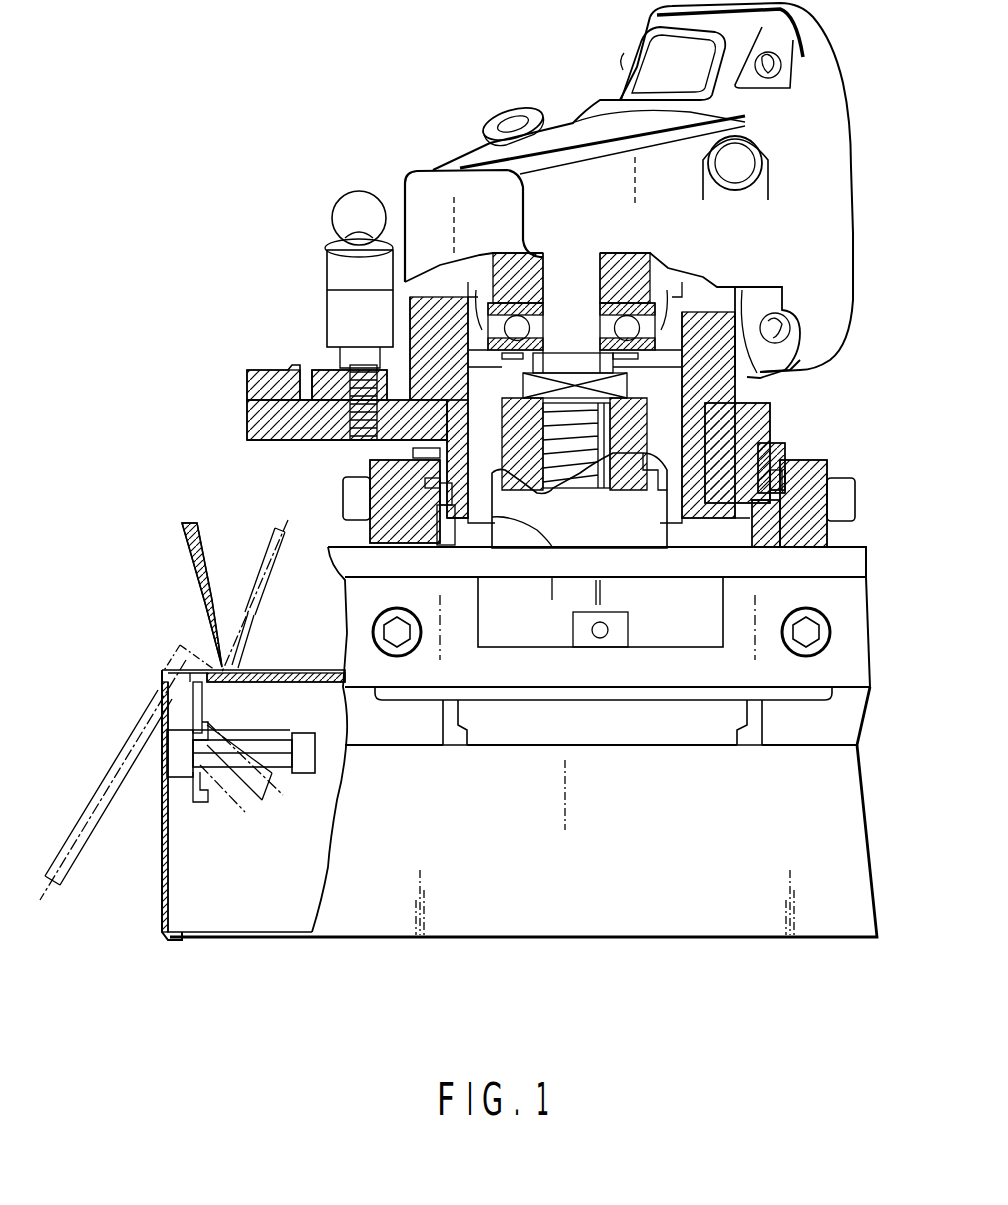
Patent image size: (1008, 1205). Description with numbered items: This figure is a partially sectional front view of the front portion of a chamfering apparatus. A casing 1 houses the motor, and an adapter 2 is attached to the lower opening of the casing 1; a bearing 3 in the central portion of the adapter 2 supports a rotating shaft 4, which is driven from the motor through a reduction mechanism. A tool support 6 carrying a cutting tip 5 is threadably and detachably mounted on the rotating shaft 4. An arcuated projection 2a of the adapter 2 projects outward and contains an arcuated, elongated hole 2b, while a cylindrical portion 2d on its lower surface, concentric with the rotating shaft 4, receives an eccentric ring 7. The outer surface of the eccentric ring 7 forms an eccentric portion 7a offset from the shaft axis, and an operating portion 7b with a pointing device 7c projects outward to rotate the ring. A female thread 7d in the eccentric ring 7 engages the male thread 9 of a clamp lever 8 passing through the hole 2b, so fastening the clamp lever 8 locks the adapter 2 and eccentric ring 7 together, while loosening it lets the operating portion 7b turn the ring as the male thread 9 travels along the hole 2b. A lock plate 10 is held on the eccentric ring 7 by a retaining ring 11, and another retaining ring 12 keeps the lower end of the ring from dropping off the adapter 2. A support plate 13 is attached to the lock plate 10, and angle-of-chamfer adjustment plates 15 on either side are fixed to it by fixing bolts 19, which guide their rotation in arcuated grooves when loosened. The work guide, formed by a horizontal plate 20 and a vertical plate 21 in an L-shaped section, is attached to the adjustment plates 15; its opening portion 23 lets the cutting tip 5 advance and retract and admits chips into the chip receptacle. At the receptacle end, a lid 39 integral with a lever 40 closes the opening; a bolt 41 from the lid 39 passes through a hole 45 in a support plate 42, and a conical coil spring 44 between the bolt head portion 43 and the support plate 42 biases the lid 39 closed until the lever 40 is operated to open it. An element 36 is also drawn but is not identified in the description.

The casing 1 is at (820, 200).
The adapter 2 is at (737, 347).
The arcuated projection 2a is at (320, 372).
The arcuated elongated hole 2b is at (355, 410).
The cylindrical portion 2d is at (760, 450).
The bearing 3 is at (640, 290).
The rotating shaft 4 is at (576, 265).
The cutting tip 5 is at (575, 580).
The tool support 6 is at (625, 518).
The eccentric ring 7 is at (755, 413).
The eccentric portion 7a is at (770, 468).
The operating portion 7b is at (265, 398).
The pointing device 7c is at (270, 375).
The female thread 7d is at (255, 425).
The clamp lever 8 is at (387, 262).
The male thread 9 is at (360, 395).
The lock plate 10 is at (410, 455).
The retaining ring 11 is at (420, 500).
The retaining ring 12 is at (440, 540).
The support plate 13 is at (778, 530).
The angle-of-chamfer adjustment plate 15 is at (800, 480).
The fixing bolt 19 is at (840, 498).
The horizontal plate 20 is at (852, 560).
The vertical plate 21 is at (848, 648).
The opening portion 23 is at (692, 608).
The box 36 is at (248, 909).
The lid 39 is at (163, 878).
The lever 40 is at (182, 548).
The bolt 41 is at (263, 750).
The support plate 42 is at (203, 702).
The bolt head portion 43 is at (308, 757).
The conical coil spring 44 is at (267, 773).
The hole 45 is at (190, 780).